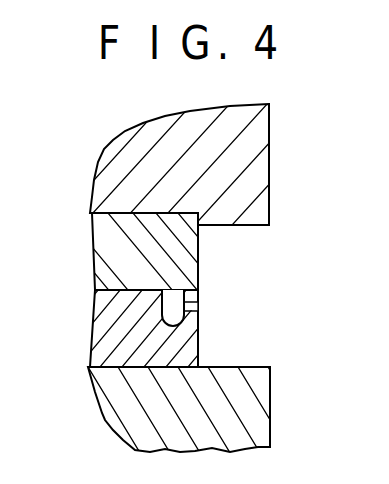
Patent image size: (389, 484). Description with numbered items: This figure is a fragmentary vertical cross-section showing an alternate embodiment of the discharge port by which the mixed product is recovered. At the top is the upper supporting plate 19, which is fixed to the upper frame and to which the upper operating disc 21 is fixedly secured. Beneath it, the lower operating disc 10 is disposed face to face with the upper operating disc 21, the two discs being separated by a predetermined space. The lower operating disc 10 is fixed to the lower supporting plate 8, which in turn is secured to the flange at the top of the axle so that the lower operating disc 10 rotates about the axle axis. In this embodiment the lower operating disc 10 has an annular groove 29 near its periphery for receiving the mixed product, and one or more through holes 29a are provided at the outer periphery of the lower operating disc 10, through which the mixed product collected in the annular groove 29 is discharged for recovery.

The upper supporting plate 19 is at (255, 175).
The upper operating disc 21 is at (183, 255).
The lower operating disc 10 is at (173, 348).
The annular groove 29 is at (166, 305).
The through hole 29a is at (188, 304).
The lower supporting plate 8 is at (233, 407).